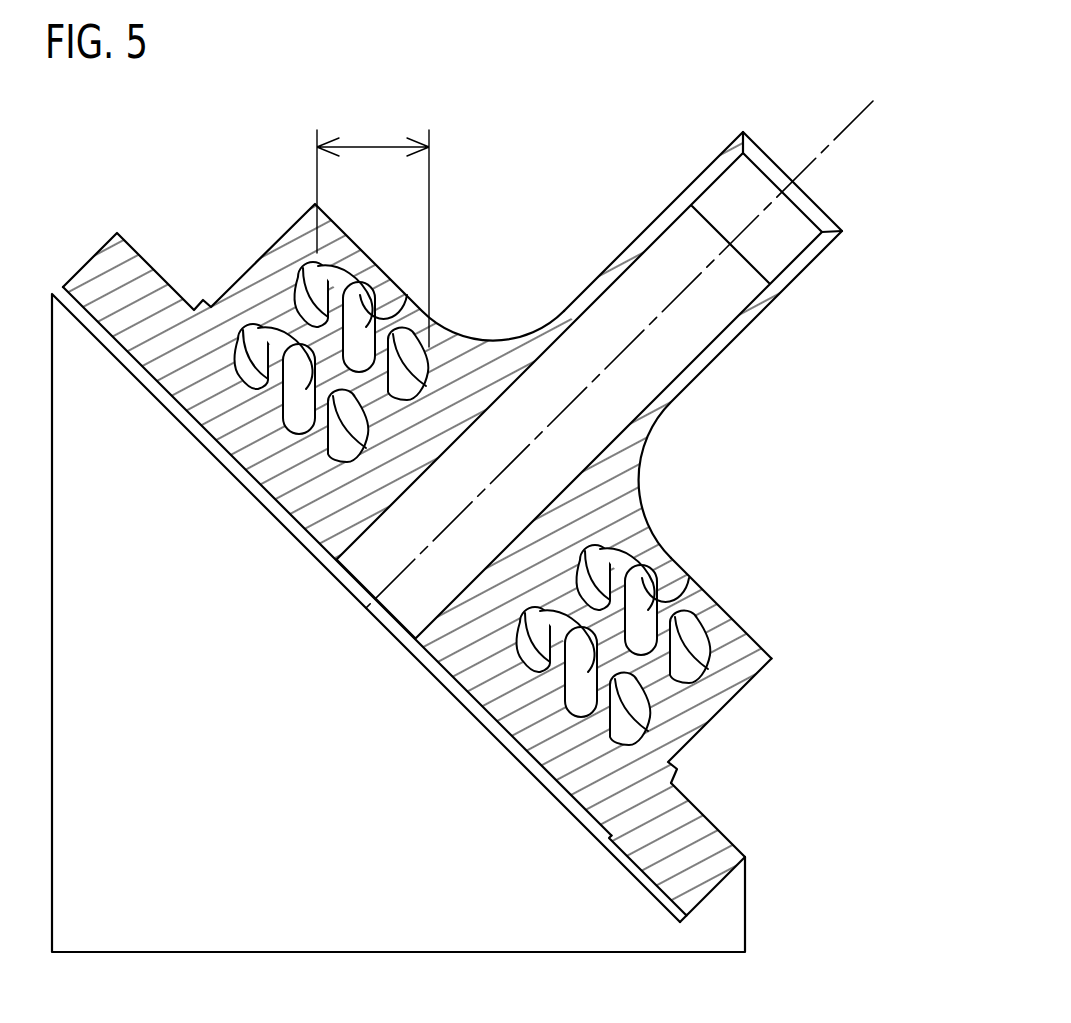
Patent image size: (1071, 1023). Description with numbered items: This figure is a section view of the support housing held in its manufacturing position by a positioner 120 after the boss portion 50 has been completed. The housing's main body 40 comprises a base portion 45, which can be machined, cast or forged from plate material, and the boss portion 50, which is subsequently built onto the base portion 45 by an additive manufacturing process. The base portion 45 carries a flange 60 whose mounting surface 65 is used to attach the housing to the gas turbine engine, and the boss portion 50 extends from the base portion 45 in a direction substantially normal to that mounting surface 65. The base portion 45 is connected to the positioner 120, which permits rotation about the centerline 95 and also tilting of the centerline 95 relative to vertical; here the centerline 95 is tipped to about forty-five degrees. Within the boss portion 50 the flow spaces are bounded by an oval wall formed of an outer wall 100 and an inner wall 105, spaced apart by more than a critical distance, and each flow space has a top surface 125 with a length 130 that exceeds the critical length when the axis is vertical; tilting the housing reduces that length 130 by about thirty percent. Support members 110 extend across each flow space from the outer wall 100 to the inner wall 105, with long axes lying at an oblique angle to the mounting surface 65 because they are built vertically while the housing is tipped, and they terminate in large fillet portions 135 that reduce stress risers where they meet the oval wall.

The main body 40 is at (222, 231).
The base portion 45 is at (212, 399).
The boss portion 50 is at (748, 672).
The flange 60 is at (713, 890).
The mounting surface 65 is at (713, 825).
The centerline 95 is at (858, 117).
The outer wall 100 is at (678, 615).
The inner wall 105 is at (517, 636).
The support members 110 is at (272, 365).
The positioner 120 is at (188, 826).
The top surface 125 is at (392, 324).
The length 130 is at (372, 147).
The fillet portions 135 is at (576, 573).